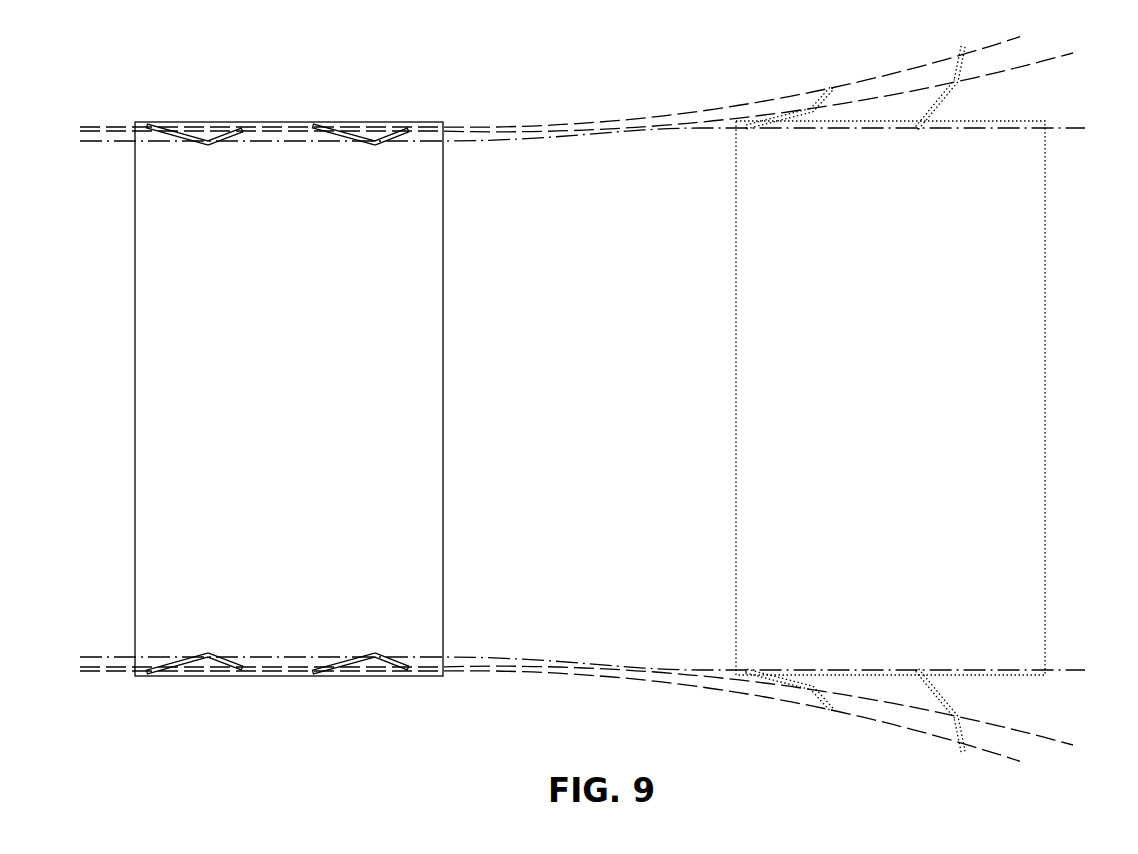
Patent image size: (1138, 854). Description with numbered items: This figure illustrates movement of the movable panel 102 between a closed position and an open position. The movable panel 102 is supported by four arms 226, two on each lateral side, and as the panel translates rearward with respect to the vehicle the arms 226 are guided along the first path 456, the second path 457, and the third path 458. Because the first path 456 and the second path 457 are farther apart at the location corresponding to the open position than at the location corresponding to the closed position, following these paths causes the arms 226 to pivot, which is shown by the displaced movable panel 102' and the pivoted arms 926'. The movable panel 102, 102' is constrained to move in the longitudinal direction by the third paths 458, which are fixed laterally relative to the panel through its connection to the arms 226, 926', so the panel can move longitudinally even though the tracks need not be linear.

The movable panel 102 is at (314, 399).
The movable panel (open position) 102' is at (861, 398).
The arm 226 is at (210, 145).
The arms (open position) 926' is at (877, 399).
The first path 456 is at (905, 68).
The second path 457 is at (1038, 64).
The third path 458 is at (1082, 129).